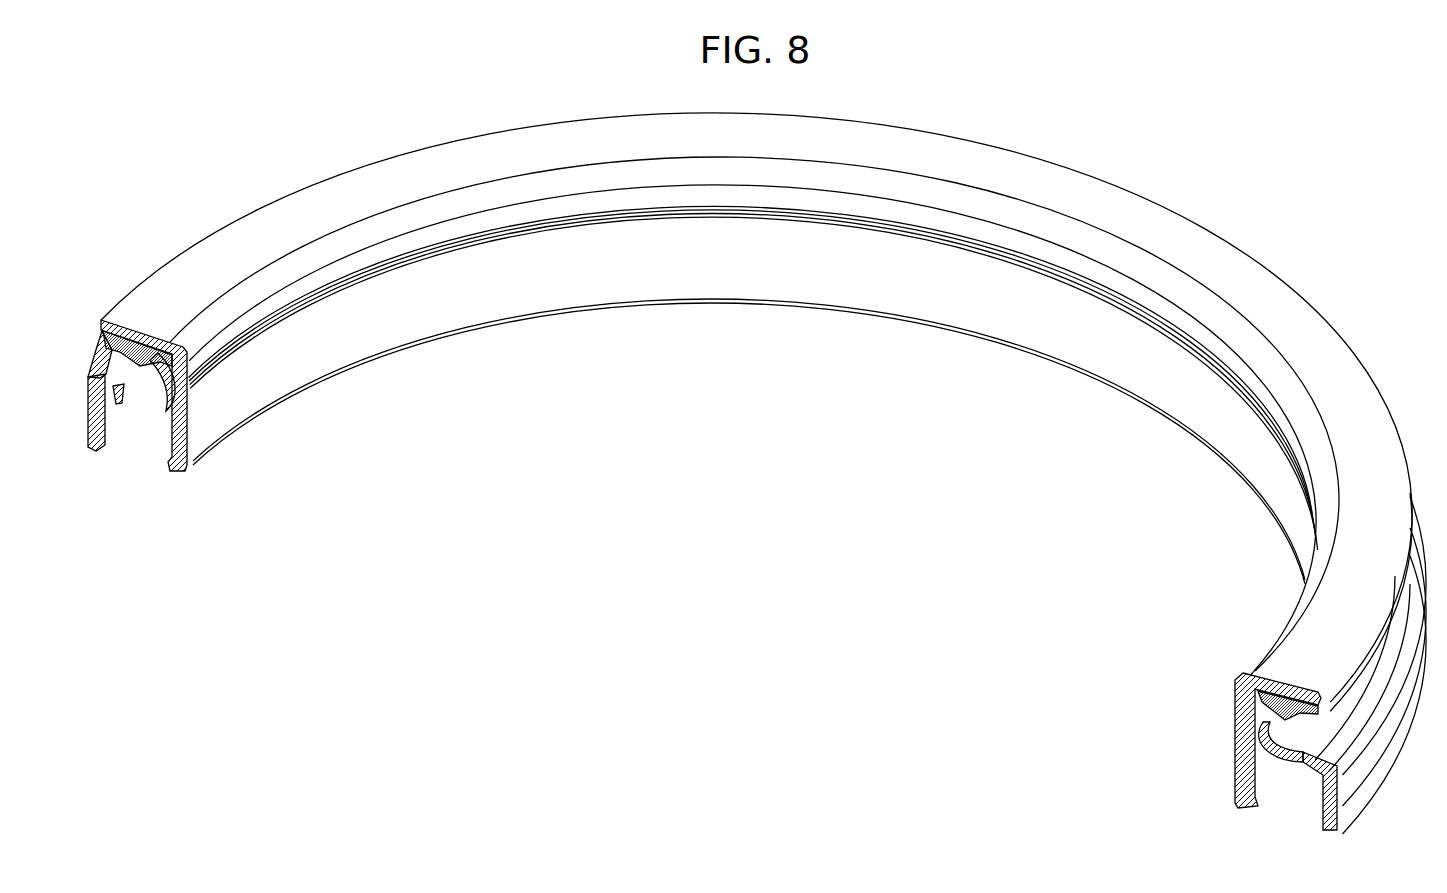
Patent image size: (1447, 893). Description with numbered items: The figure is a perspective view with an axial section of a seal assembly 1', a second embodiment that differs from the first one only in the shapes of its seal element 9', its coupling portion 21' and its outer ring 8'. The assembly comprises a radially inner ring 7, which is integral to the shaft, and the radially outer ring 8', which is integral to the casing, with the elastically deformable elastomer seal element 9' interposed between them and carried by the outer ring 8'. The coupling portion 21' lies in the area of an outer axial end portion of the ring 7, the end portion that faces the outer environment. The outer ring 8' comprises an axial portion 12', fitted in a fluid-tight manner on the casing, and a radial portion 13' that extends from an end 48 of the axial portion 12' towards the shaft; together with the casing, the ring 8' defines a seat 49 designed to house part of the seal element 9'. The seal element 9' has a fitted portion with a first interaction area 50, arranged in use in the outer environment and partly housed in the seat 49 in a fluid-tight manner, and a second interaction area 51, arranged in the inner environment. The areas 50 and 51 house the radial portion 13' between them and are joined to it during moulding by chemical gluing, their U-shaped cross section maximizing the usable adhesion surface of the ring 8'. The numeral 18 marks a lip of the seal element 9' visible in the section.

The seal assembly 1' is at (744, 473).
The radially inner ring 7 is at (810, 285).
The coupling portion 21' is at (756, 460).
The seat 49 is at (72, 378).
The first interaction area 50 is at (128, 372).
The outer ring 8' is at (84, 442).
The intermediate lip 18 is at (116, 412).
The seal element 9' is at (157, 443).
The second interaction area 51 is at (1296, 765).
The axial portion 12' is at (1300, 812).
The radial portion 13' is at (1371, 648).
The end 48 is at (1340, 815).